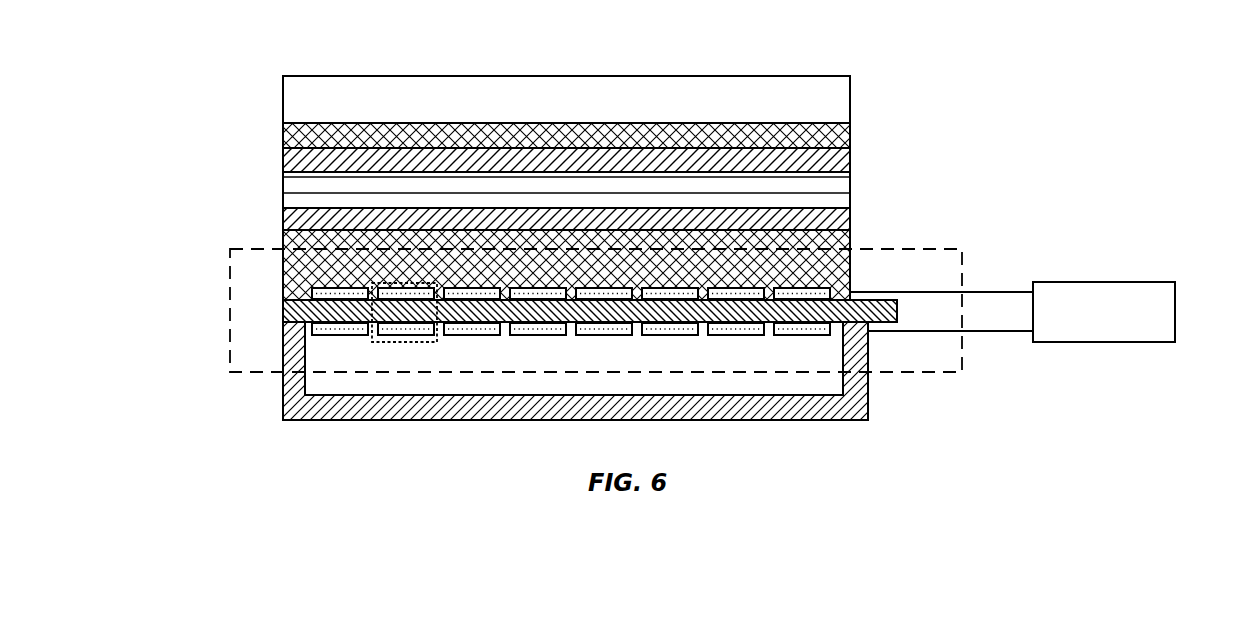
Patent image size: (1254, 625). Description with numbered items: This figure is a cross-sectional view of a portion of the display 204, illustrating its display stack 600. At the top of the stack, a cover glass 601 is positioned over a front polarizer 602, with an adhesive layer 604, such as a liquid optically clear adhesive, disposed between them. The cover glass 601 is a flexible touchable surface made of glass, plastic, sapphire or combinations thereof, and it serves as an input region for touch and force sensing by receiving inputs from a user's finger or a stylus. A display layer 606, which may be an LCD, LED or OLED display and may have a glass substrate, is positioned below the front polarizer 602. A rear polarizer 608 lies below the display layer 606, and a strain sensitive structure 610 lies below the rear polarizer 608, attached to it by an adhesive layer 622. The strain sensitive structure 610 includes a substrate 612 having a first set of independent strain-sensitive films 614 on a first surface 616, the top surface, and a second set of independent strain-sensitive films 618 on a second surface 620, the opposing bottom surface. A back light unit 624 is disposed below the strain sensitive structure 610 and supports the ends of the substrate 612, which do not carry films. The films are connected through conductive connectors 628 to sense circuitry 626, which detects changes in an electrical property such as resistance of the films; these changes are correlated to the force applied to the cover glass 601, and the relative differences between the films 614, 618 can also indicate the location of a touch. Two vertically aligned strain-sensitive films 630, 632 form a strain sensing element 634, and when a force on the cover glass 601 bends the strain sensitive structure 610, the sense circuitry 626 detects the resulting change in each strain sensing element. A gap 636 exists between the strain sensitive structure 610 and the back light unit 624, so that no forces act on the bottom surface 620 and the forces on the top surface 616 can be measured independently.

The display 204 is at (880, 51).
The display stack 600 is at (182, 76).
The cover glass 601 is at (283, 97).
The front polarizer 602 is at (283, 158).
The adhesive layer 604 is at (850, 135).
The display layer 606 is at (850, 188).
The rear polarizer 608 is at (283, 218).
The strain sensitive structure 610 is at (230, 306).
The substrate 612 is at (897, 311).
The first set of independent strain-sensitive films 614 is at (312, 293).
The first surface 616 is at (706, 289).
The second set of independent strain-sensitive films 618 is at (312, 330).
The second surface 620 is at (705, 335).
The adhesive layer 622 is at (850, 236).
The back light unit 624 is at (283, 397).
The sense circuitry 626 is at (1175, 305).
The conductive connectors 628 is at (998, 333).
The strain-sensitive film 630 is at (423, 290).
The strain-sensitive film 632 is at (393, 327).
The strain sensing element 634 is at (374, 342).
The gap 636 is at (474, 366).